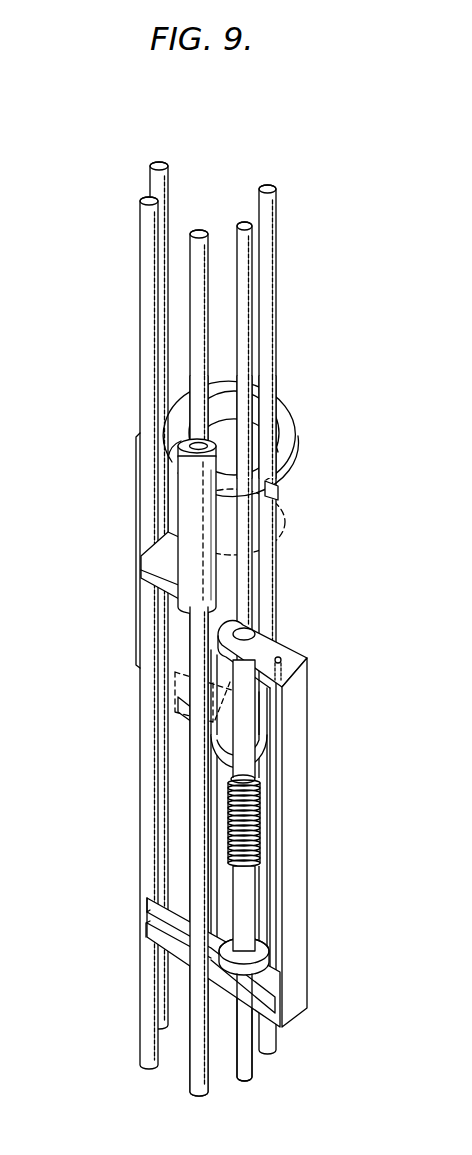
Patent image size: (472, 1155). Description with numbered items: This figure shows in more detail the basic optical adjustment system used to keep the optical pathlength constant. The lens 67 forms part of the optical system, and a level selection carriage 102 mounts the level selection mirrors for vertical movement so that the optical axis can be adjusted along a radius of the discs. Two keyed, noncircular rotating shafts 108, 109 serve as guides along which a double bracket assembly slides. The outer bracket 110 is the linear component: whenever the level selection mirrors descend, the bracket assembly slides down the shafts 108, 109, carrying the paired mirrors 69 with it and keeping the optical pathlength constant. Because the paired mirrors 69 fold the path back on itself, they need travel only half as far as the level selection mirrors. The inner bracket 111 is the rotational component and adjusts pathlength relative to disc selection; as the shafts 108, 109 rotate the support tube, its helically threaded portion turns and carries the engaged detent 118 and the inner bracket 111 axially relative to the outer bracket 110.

The shaft 108 is at (306, 651).
The shaft 109 is at (248, 278).
The level selection carriage 102 is at (292, 428).
The lens 67 is at (236, 517).
The paired mirrors 69 is at (277, 600).
The outer bracket 110 is at (233, 824).
The inner bracket 111 is at (218, 822).
The detent 118 is at (146, 885).